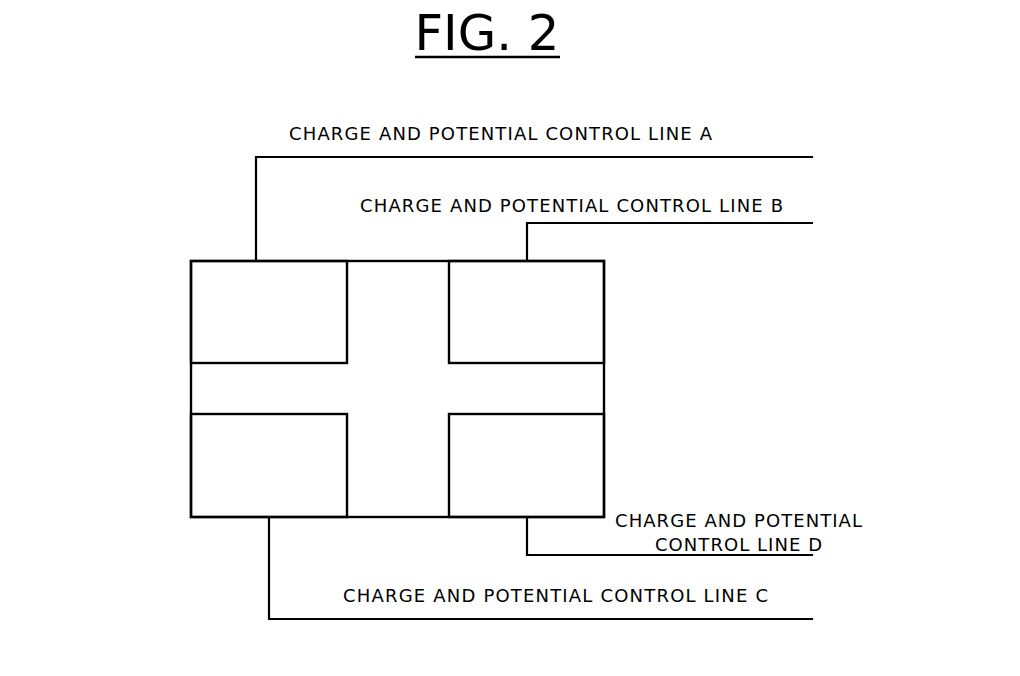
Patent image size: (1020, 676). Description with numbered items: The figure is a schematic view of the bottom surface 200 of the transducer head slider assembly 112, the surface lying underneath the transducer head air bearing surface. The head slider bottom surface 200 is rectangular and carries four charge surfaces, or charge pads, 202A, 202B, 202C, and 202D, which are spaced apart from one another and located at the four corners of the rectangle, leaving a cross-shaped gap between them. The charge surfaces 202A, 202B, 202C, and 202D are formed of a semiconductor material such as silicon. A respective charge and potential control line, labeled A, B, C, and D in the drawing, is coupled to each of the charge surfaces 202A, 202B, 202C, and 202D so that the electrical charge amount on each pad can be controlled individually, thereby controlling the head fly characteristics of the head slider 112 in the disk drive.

The transducer head slider assembly 112 is at (323, 389).
The head slider bottom surface 200 is at (152, 333).
The charge surface 202A is at (236, 292).
The charge surface 202B is at (568, 322).
The charge surface 202C is at (230, 467).
The charge surface 202D is at (553, 459).